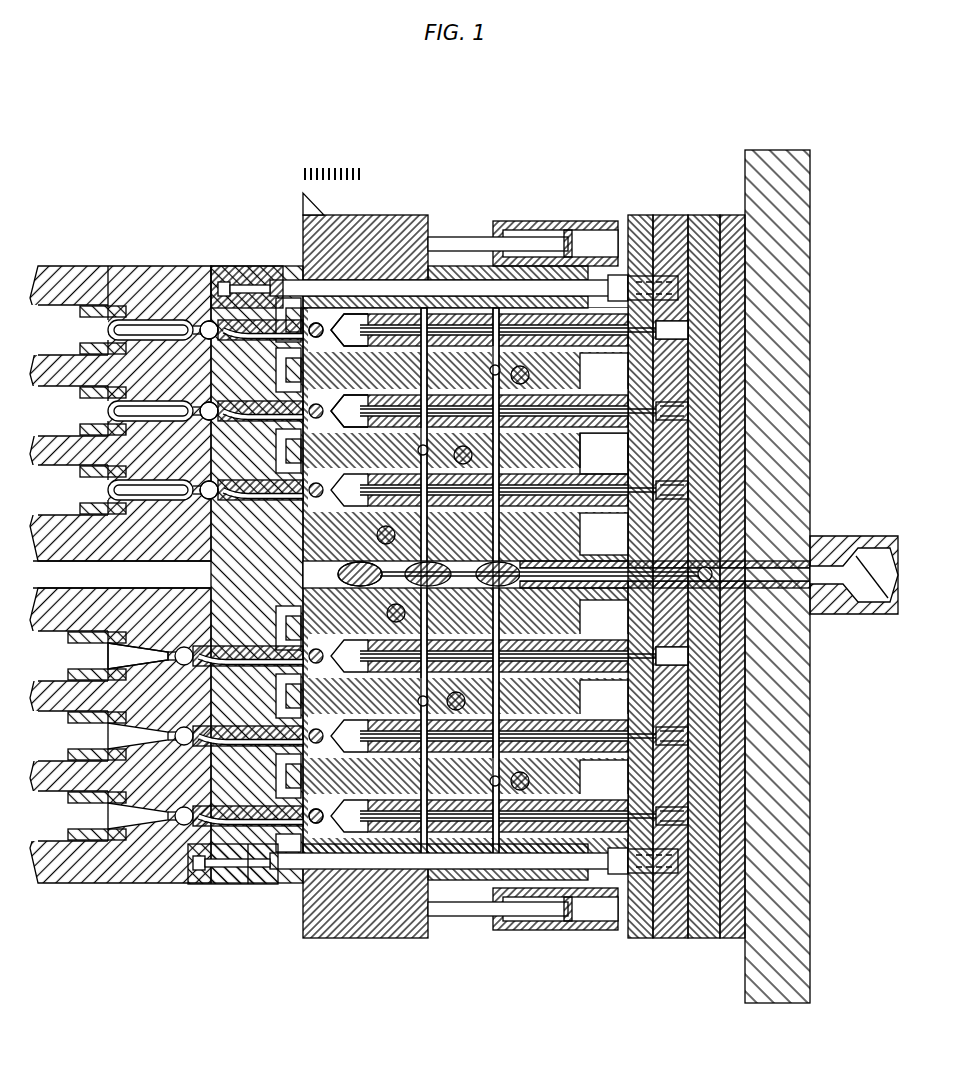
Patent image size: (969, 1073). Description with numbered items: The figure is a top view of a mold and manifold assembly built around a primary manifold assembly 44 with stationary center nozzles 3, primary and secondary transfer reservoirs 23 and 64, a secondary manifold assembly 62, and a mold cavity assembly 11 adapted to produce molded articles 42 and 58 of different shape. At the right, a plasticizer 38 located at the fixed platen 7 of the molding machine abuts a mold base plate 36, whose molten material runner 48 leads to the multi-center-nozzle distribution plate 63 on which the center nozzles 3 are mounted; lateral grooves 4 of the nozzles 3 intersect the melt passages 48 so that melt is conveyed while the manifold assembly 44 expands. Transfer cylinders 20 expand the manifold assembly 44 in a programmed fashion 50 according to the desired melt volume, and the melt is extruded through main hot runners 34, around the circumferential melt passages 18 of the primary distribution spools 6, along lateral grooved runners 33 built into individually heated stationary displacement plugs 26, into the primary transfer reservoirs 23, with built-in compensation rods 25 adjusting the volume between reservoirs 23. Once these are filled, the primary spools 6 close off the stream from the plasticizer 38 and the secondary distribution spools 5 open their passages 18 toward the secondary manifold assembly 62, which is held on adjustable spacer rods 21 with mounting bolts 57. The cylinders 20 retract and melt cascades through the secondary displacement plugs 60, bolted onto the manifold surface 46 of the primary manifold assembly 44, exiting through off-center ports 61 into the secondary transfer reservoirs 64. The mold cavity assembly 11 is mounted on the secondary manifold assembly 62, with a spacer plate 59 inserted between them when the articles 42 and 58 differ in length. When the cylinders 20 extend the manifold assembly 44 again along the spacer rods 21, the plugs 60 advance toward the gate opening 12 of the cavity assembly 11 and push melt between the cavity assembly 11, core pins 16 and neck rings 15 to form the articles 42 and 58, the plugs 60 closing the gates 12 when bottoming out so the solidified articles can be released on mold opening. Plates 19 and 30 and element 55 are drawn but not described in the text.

The stationary center nozzle 3 is at (543, 598).
The lateral groove 4 is at (527, 532).
The secondary distribution spool 5 is at (309, 322).
The primary distribution spool 6 is at (545, 358).
The fixed platen 7 is at (755, 142).
The mold cavity assembly 11 is at (72, 258).
The gate opening 12 is at (185, 262).
The neck ring 15 is at (84, 350).
The core pin 16 is at (72, 573).
The circumferential melt passage 18 is at (455, 692).
The plate 19 is at (630, 207).
The transfer cylinder 20 is at (548, 228).
The adjustable spacer rod 21 is at (345, 272).
The primary transfer reservoir 23 is at (344, 594).
The compensation rod 25 is at (660, 394).
The stationary displacement plug 26 is at (598, 466).
The back plate 30 is at (665, 207).
The lateral grooved runner 33 is at (395, 806).
The main hot runner 34 is at (486, 366).
The mold base plate 36 is at (722, 207).
The plasticizer 38 is at (848, 530).
The molded article 42 is at (160, 306).
The primary manifold assembly 44 is at (395, 207).
The manifold surface 46 is at (295, 918).
The melt passage 48 is at (490, 445).
The programmed fashion 50 is at (318, 158).
The gate 55 is at (345, 712).
The mounting bolt 57 is at (245, 876).
The molded article 58 is at (145, 645).
The spacer plate 59 is at (188, 877).
The secondary displacement plug 60 is at (238, 395).
The off-center exit port 61 is at (198, 338).
The secondary manifold assembly 62 is at (238, 258).
The multi-center-nozzle distribution plate 63 is at (700, 207).
The secondary transfer reservoir 64 is at (178, 386).